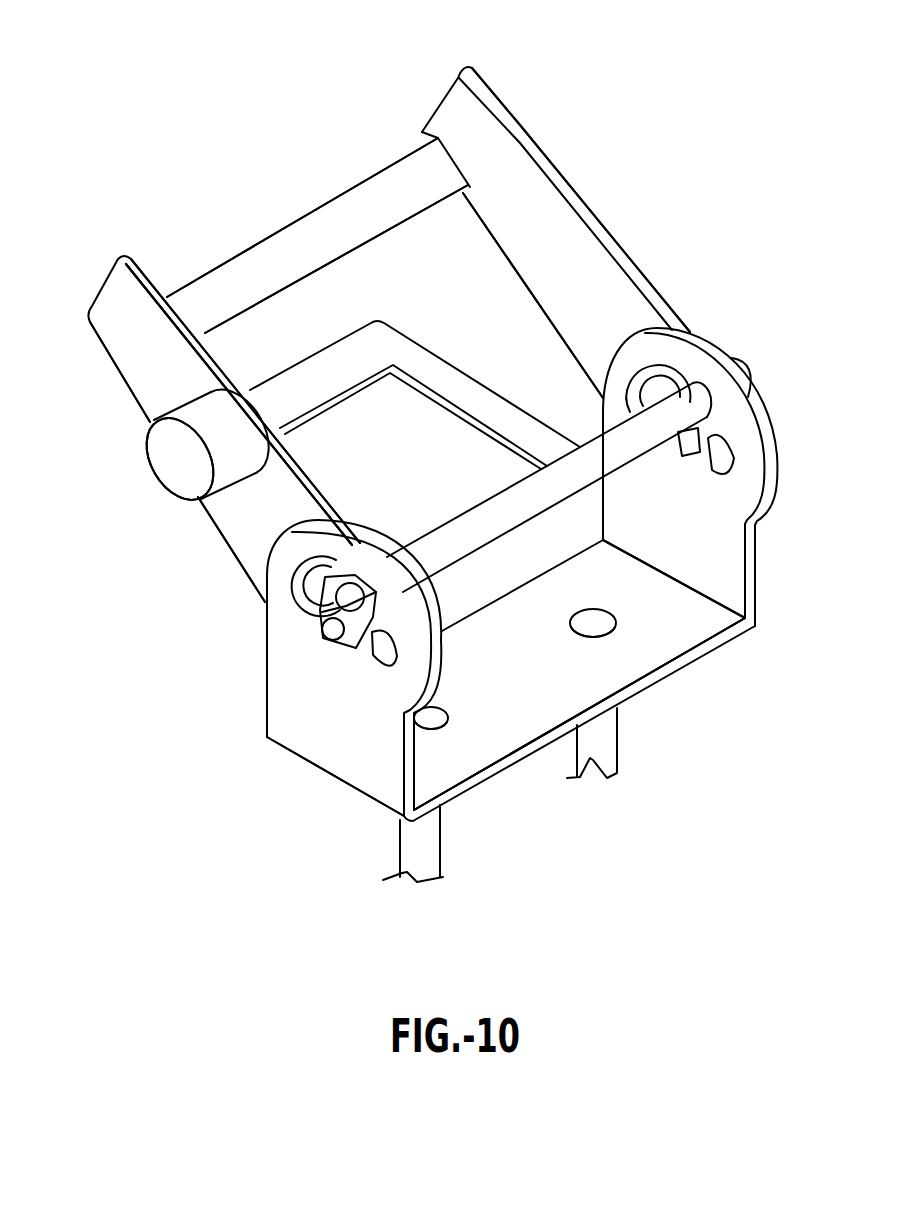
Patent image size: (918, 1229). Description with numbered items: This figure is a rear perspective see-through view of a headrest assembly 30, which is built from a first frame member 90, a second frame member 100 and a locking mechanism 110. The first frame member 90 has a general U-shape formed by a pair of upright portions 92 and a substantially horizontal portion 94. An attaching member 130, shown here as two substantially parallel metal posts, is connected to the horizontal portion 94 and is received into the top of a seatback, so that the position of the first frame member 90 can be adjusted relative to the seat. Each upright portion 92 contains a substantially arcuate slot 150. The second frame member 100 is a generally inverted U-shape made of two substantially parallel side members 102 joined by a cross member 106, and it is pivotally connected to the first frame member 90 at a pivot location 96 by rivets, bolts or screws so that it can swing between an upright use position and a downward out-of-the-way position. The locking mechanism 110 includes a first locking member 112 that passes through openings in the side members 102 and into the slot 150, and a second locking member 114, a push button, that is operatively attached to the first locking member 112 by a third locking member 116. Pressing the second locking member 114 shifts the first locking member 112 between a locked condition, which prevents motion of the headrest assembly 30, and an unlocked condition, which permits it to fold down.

The headrest assembly 30 is at (140, 171).
The second frame member 100 is at (186, 182).
The side member 102 is at (200, 379).
The cross member 106 is at (333, 222).
The locking mechanism 110 is at (80, 363).
The first locking member 112 is at (335, 605).
The second locking member 114 is at (171, 473).
The third locking member 116 is at (272, 408).
The slot 150 is at (331, 556).
The pivot location 96 is at (312, 633).
The first frame member 90 is at (772, 631).
The upright portion 92 is at (725, 552).
The substantially horizontal portion 94 is at (625, 668).
The attaching member 130 is at (440, 850).